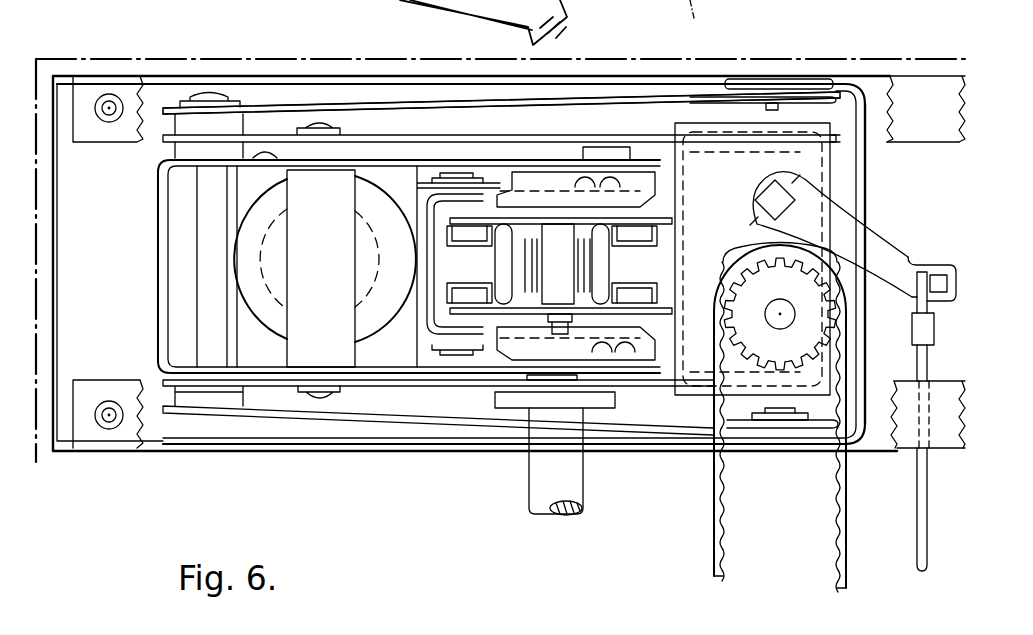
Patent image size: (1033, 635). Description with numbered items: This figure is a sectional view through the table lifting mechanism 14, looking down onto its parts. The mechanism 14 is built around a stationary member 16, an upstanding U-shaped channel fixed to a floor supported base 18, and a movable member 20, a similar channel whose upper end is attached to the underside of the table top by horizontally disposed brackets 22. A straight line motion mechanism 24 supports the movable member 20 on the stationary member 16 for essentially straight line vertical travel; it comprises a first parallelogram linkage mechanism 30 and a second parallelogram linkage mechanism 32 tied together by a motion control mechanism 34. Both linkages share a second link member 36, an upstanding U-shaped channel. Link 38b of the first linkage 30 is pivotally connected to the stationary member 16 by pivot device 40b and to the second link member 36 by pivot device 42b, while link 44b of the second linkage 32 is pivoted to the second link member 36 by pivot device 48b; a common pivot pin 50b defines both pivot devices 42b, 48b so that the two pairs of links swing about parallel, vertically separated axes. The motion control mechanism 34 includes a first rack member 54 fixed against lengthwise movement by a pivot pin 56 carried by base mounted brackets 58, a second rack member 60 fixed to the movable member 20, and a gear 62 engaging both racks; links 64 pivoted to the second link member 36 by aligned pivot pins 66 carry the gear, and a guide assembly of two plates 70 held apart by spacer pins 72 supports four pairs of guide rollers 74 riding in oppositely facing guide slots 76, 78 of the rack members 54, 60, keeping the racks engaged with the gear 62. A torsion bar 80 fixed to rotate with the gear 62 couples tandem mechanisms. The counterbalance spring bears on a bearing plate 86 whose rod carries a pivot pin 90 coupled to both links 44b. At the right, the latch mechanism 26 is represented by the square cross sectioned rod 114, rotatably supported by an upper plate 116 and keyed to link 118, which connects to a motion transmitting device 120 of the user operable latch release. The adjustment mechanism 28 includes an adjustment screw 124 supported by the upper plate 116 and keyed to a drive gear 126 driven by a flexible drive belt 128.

The mechanism 14 is at (158, 68).
The stationary member 16 is at (872, 186).
The base 18 is at (96, 145).
The movable member 20 is at (800, 156).
The brackets 22 is at (96, 145).
The straight line motion mechanism 24 is at (338, 450).
The latch mechanism 26 is at (900, 230).
The adjustment mechanism 28 is at (752, 250).
The first parallelogram linkage mechanism 30 is at (428, 128).
The second parallelogram linkage mechanism 32 is at (560, 96).
The motion control mechanism 34 is at (620, 425).
The second link member 36 is at (160, 332).
The link 38b is at (296, 106).
The pivot device 40b is at (770, 108).
The pivot device 42b is at (127, 434).
The pivot device 48b is at (109, 415).
The common pivot pin 50b is at (109, 415).
The link 44b is at (394, 133).
The first rack member 54 is at (467, 264).
The pivot pin 56 is at (456, 172).
The brackets 58 is at (432, 181).
The second rack member 60 is at (634, 264).
The gear 62 is at (548, 312).
The links 64 is at (622, 195).
The pivot pins 66 is at (590, 185).
The plates 70 is at (655, 240).
The spacer pins 72 is at (566, 264).
The guide rollers 74 is at (447, 285).
The guide slots 76 is at (482, 232).
The guide slots 78 is at (640, 232).
The torsion bar 80 is at (528, 470).
The bearing plate 86 is at (325, 268).
The pivot pin 90 is at (330, 150).
The rod 114 is at (752, 190).
The upper plate 116 is at (755, 259).
The link 118 is at (893, 238).
The motion transmitting device 120 is at (928, 355).
The adjustment screw 124 is at (798, 300).
The drive gear 126 is at (779, 314).
The flexible drive belt 128 is at (850, 565).